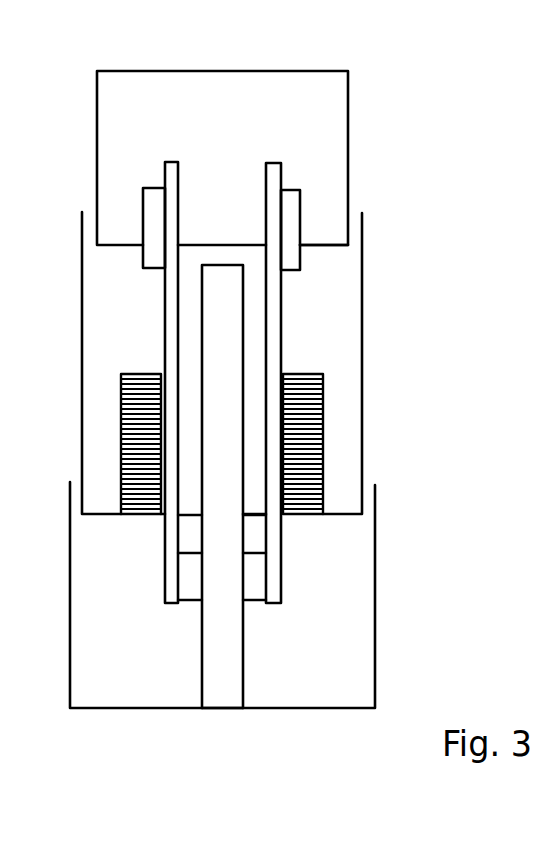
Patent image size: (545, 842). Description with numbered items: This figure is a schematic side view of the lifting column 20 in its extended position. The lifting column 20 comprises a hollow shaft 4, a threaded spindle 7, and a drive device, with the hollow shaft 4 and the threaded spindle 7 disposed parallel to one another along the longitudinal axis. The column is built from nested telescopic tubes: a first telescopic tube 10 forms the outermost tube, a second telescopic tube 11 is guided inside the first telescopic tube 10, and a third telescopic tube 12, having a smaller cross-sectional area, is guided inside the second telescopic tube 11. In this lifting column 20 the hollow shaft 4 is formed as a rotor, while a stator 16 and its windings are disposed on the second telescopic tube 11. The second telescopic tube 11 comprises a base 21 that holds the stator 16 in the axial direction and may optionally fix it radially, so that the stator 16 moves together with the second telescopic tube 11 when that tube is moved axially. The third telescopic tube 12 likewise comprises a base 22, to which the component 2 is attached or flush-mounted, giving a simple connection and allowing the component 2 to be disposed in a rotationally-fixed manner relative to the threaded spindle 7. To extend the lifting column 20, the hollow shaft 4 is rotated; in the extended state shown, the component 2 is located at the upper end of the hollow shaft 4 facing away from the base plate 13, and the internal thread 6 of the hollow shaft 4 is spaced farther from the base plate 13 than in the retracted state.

The lifting column 20 is at (434, 106).
The third telescopic tube 12 is at (349, 160).
The base 22 is at (326, 249).
The component 2 is at (296, 222).
The hollow shaft 4 is at (273, 172).
The threaded spindle 7 is at (232, 308).
The second telescopic tube 11 is at (362, 383).
The base 21 is at (340, 517).
The stator 16 is at (302, 455).
The first telescopic tube 10 is at (377, 578).
The base plate 13 is at (303, 710).
The internal thread 6 is at (250, 578).